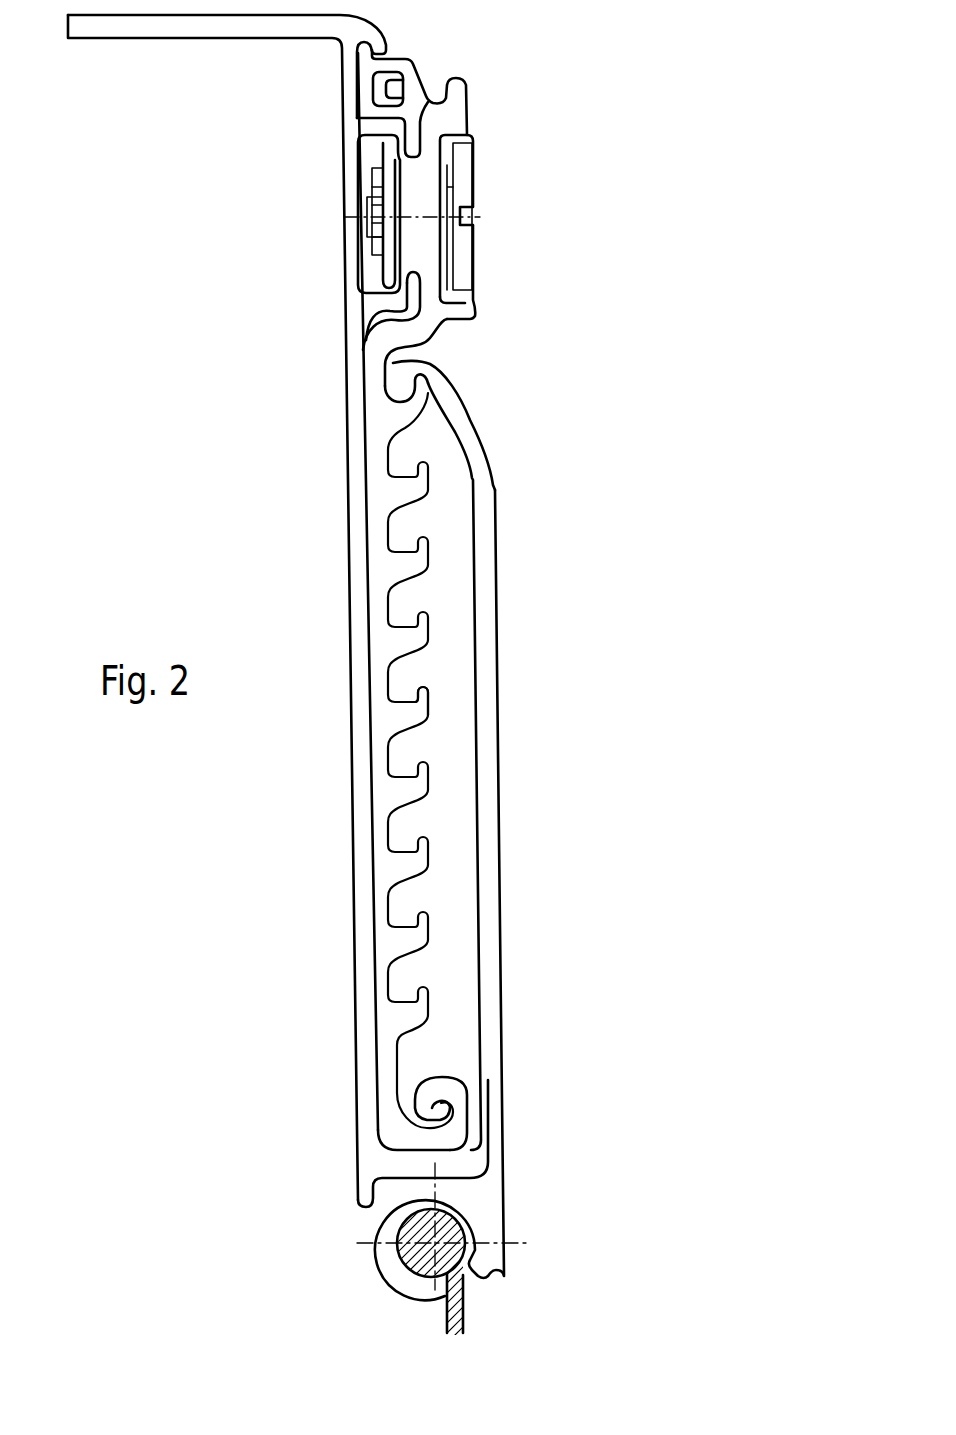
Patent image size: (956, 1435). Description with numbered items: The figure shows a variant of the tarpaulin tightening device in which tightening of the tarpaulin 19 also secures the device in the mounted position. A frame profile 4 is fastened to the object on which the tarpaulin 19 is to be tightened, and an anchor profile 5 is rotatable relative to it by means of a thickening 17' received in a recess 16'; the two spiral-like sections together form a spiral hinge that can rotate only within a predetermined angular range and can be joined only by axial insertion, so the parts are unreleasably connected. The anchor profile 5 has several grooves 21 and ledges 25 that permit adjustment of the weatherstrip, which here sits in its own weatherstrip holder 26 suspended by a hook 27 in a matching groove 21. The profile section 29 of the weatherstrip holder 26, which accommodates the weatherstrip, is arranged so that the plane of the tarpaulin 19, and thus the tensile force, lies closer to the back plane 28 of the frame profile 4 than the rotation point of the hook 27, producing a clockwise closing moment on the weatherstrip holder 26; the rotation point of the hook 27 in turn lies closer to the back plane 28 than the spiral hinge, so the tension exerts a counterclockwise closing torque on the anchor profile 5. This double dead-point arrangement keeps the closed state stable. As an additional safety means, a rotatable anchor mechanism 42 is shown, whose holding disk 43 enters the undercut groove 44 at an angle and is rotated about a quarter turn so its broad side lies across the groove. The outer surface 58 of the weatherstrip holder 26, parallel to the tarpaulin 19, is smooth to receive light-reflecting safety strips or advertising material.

The frame profile 4 is at (360, 312).
The anchor profile 5 is at (433, 320).
The recess 16' is at (520, 1091).
The thickening 17' is at (351, 1139).
The tarpaulin 19 is at (458, 1317).
The groove 21 is at (403, 700).
The ledge 25 is at (430, 703).
The weatherstrip holder 26 is at (492, 527).
The hook 27 is at (410, 382).
The back plane 28 is at (350, 493).
The profile section 29 is at (543, 1192).
The rotatable anchor mechanism 42 is at (520, 120).
The holding disk 43 is at (383, 160).
The undercut groove 44 is at (374, 281).
The outer surface 58 is at (500, 828).